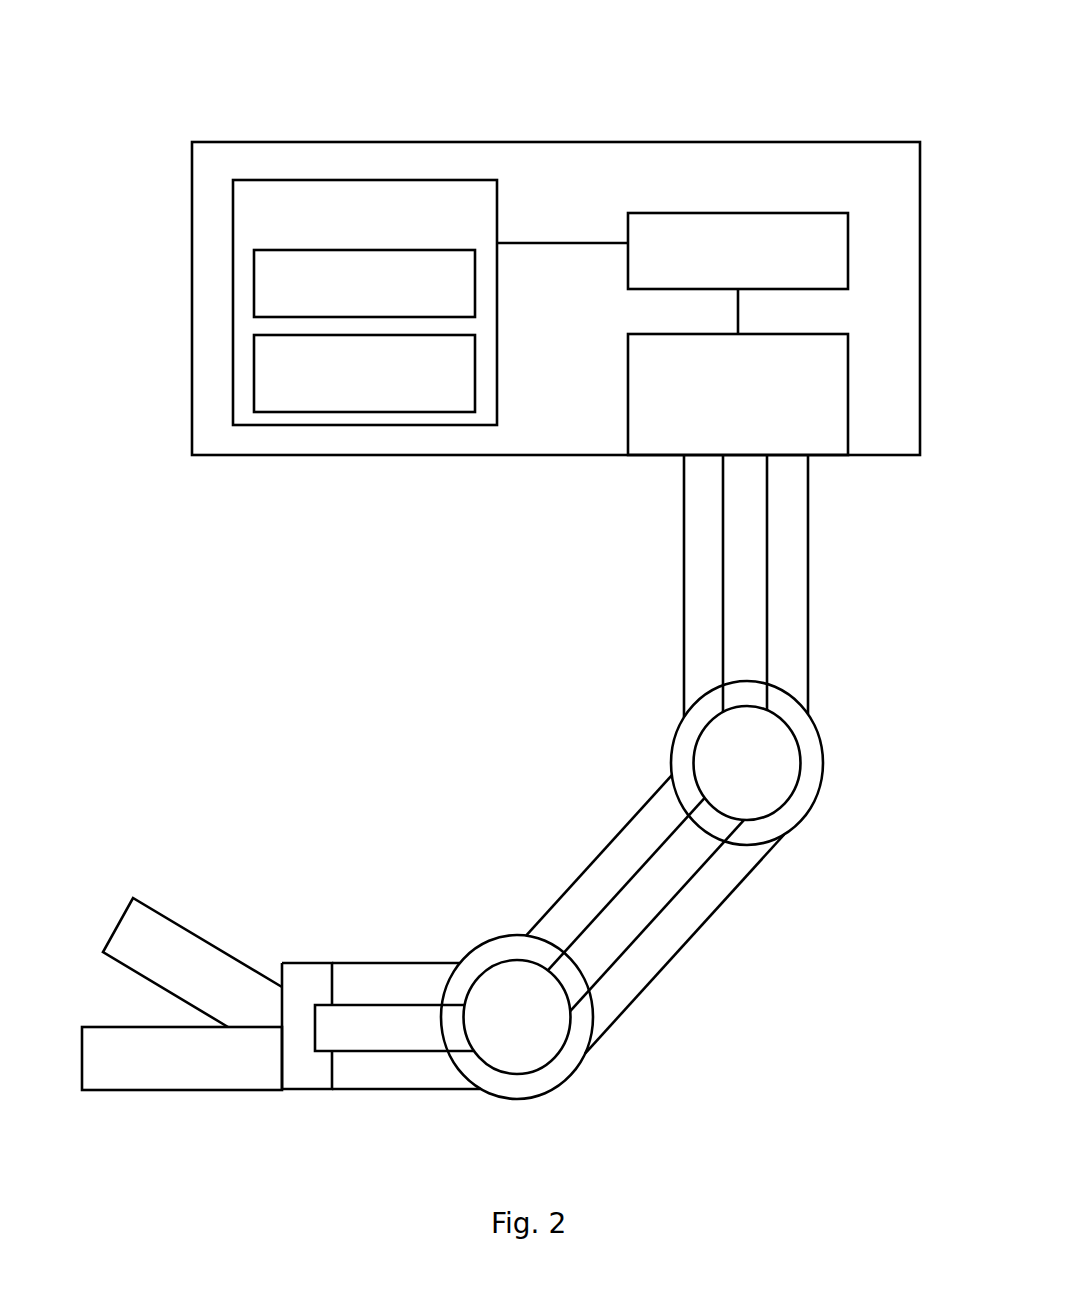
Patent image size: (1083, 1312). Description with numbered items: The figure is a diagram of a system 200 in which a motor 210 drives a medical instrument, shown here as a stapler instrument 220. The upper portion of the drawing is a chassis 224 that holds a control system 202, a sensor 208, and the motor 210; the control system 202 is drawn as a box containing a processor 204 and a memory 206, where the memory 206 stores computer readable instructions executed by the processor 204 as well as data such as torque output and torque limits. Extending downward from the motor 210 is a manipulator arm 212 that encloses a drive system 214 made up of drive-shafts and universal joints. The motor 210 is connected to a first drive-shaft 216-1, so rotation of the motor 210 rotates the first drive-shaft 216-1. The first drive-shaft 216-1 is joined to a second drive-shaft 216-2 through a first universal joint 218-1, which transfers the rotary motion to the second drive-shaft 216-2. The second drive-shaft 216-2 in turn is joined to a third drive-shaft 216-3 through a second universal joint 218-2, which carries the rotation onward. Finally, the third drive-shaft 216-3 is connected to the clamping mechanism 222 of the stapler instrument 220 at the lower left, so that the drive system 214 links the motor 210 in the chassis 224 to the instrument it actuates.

The system 200 is at (205, 90).
The control system 202 is at (346, 240).
The processor 204 is at (346, 311).
The memory 206 is at (346, 401).
The sensor 208 is at (719, 278).
The motor 210 is at (719, 423).
The manipulator arm 212 is at (810, 553).
The drive system 214 is at (522, 730).
The first drive-shaft 216-1 is at (768, 643).
The second drive-shaft 216-2 is at (653, 920).
The third drive-shaft 216-3 is at (403, 1052).
The first universal joint 218-1 is at (717, 781).
The second universal joint 218-2 is at (488, 1033).
The stapler instrument 220 is at (257, 907).
The clamping mechanism 222 is at (182, 935).
The chassis 224 is at (767, 142).